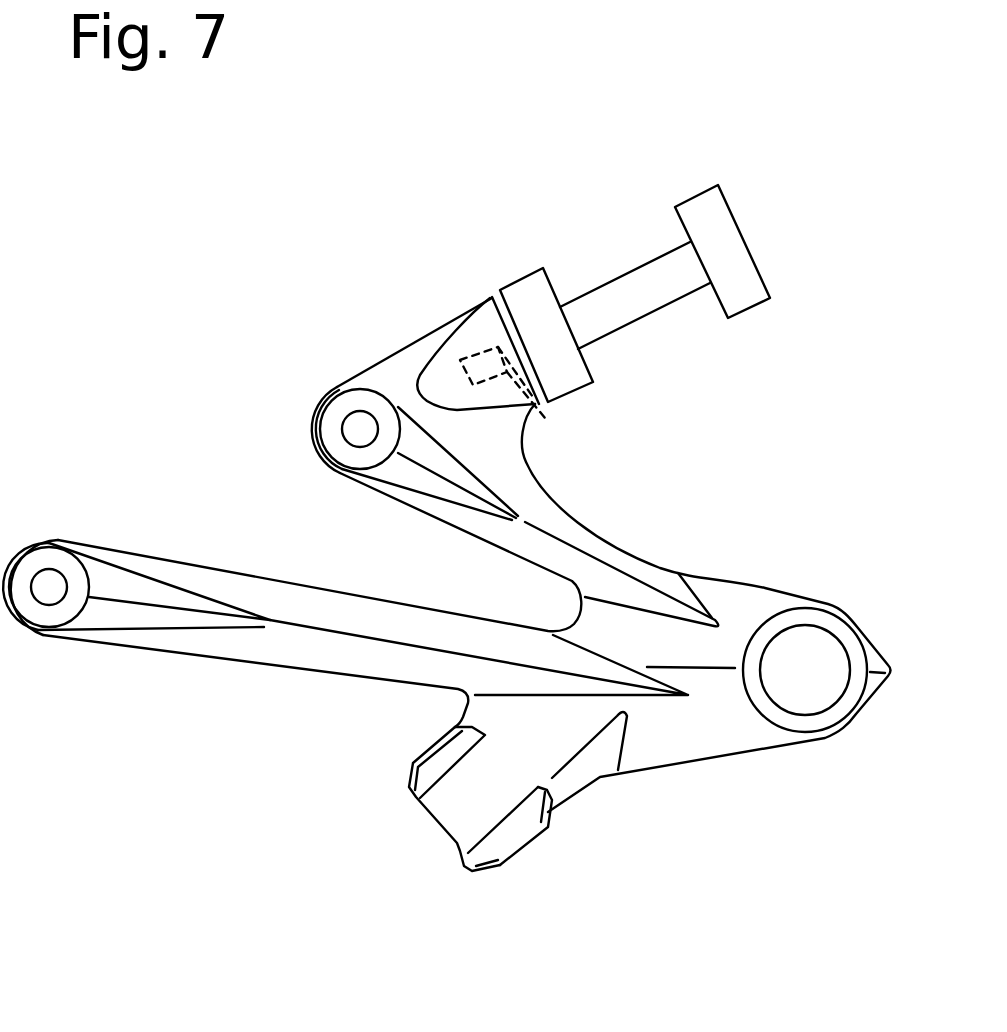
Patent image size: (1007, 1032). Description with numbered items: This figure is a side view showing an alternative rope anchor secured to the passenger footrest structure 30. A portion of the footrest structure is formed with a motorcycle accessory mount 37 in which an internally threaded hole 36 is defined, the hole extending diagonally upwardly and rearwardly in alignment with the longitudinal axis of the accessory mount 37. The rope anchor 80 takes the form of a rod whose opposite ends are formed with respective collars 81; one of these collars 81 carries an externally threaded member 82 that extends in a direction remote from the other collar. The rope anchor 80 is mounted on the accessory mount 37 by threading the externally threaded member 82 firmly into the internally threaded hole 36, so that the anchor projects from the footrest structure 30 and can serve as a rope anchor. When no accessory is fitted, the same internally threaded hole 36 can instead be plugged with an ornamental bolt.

The passenger footrest structure 30 is at (295, 681).
The internally threaded hole 36 is at (497, 343).
The motorcycle accessory mount 37 is at (470, 337).
The rope anchor 80 is at (714, 231).
The collars 81 is at (740, 293).
The externally threaded member 82 is at (545, 420).